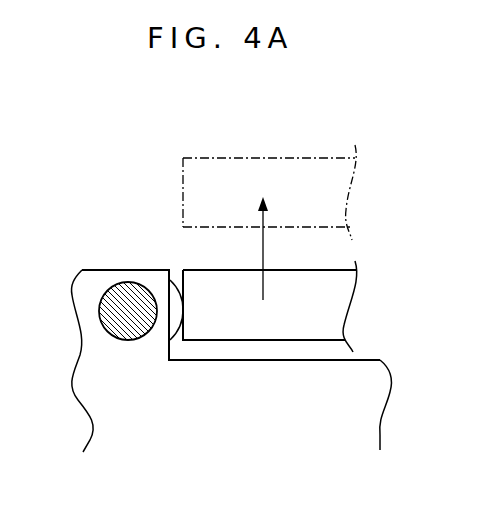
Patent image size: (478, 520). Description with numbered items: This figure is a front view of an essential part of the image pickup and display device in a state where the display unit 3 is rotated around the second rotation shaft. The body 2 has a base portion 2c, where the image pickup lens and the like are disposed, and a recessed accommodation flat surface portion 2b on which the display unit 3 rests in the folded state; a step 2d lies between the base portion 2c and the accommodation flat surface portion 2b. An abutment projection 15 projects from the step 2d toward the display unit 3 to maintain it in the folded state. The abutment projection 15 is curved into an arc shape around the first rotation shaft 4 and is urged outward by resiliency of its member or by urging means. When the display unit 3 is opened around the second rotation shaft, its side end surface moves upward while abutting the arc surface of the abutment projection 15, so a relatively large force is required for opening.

The body 2 is at (328, 415).
The accommodation flat surface portion 2b is at (370, 357).
The base portion 2c is at (106, 278).
The step 2d is at (175, 277).
The display unit 3 is at (335, 183).
The first rotation shaft 4 is at (112, 304).
The abutment projection 15 is at (175, 322).